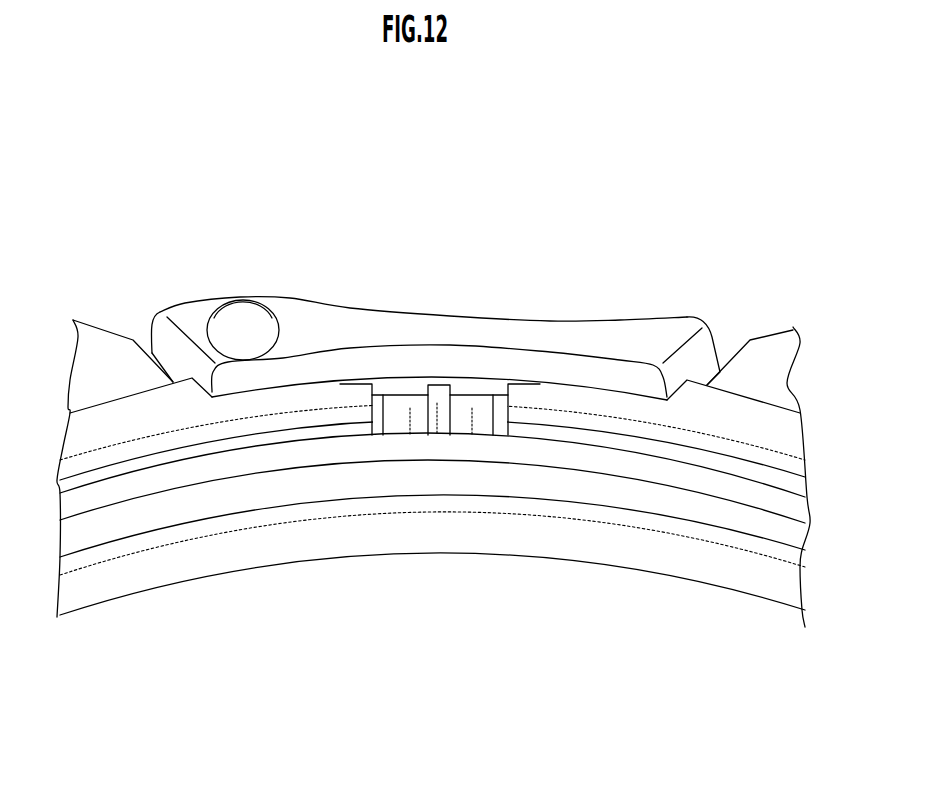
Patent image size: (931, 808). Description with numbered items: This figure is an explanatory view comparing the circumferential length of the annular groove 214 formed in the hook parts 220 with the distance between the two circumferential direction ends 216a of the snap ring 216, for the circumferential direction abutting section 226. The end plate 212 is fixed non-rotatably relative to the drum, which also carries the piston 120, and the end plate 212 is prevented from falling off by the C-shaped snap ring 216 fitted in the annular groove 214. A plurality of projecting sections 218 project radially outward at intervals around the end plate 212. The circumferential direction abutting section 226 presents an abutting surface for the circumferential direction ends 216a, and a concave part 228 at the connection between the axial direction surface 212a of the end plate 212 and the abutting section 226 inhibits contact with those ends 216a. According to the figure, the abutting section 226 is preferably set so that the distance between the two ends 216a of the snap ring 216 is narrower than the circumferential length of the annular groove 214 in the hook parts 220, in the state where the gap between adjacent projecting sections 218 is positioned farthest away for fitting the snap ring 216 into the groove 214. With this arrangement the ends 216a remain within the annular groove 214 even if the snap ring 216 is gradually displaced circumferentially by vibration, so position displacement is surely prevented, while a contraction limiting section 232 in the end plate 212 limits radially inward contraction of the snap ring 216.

The piston 120 is at (214, 292).
The end plate 212 is at (550, 460).
The axial direction surface 212a is at (288, 432).
The annular groove 214 is at (670, 398).
The snap ring 216 is at (163, 413).
The circumferential direction end 216a is at (393, 395).
The projecting sections 218 is at (98, 362).
The hook parts 220 is at (530, 337).
The circumferential direction abutting section 226 is at (433, 436).
The concave part 228 is at (410, 435).
The contraction limiting section 232 is at (590, 445).